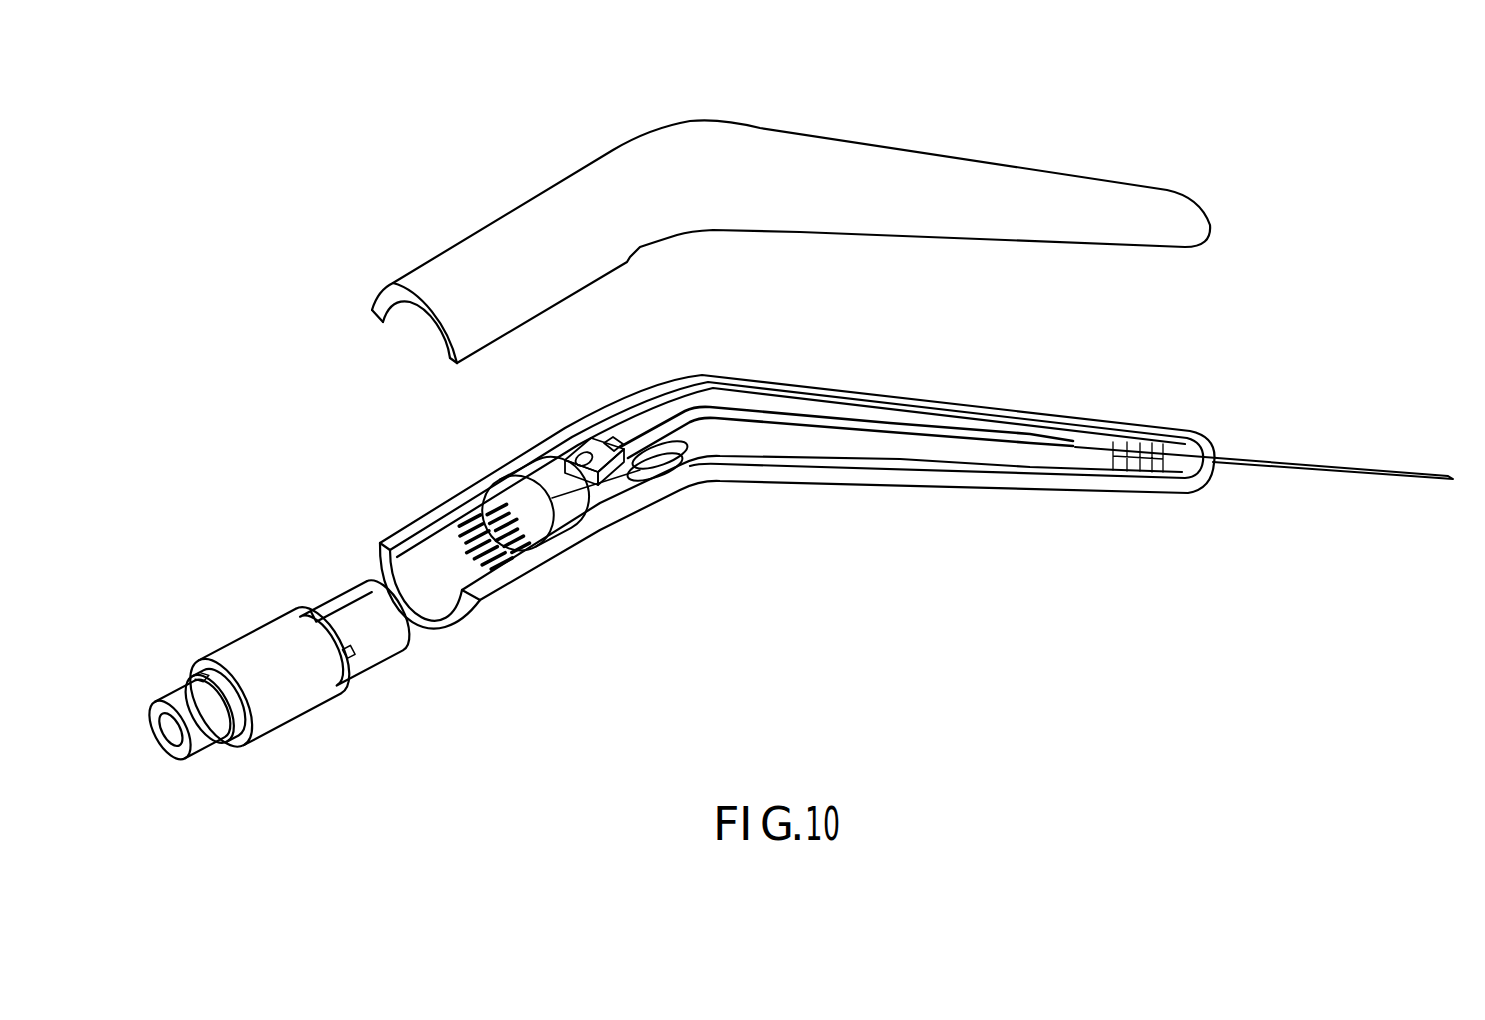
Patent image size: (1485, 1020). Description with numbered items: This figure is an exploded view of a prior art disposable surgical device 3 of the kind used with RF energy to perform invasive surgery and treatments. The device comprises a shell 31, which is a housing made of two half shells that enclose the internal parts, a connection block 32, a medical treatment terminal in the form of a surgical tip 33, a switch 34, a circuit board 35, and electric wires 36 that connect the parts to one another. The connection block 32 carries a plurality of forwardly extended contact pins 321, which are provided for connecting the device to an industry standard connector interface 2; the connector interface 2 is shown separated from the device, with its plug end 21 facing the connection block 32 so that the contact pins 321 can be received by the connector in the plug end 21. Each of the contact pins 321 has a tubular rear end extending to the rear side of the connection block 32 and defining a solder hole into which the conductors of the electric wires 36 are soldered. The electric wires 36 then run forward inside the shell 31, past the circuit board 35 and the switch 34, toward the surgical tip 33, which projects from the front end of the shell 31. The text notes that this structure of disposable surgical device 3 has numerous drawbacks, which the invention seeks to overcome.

The industry standard connector interface 2 is at (253, 650).
The plug end 21 is at (357, 617).
The disposable surgical device 3 is at (1316, 218).
The shell 31 is at (1082, 193).
The connection block 32 is at (517, 483).
The contact pins 321 is at (473, 517).
The surgical tip 33 is at (1310, 467).
The switch 34 is at (667, 474).
The circuit board 35 is at (597, 437).
The electric wires 36 is at (727, 410).